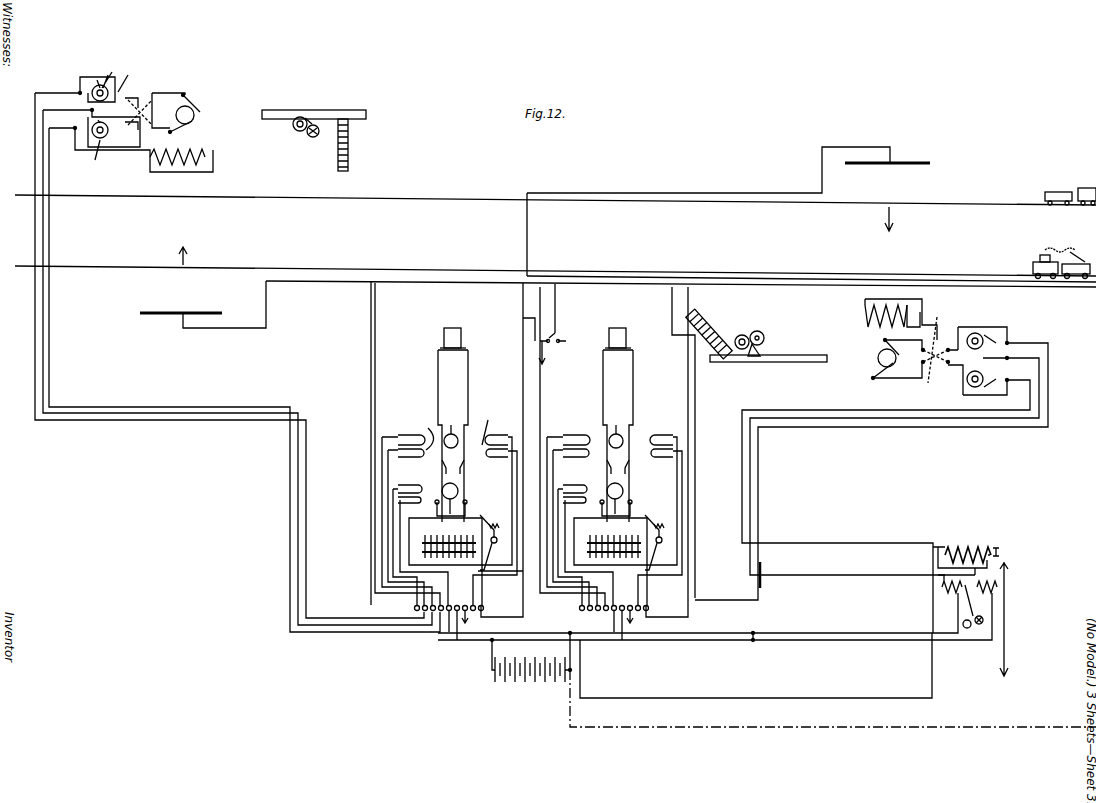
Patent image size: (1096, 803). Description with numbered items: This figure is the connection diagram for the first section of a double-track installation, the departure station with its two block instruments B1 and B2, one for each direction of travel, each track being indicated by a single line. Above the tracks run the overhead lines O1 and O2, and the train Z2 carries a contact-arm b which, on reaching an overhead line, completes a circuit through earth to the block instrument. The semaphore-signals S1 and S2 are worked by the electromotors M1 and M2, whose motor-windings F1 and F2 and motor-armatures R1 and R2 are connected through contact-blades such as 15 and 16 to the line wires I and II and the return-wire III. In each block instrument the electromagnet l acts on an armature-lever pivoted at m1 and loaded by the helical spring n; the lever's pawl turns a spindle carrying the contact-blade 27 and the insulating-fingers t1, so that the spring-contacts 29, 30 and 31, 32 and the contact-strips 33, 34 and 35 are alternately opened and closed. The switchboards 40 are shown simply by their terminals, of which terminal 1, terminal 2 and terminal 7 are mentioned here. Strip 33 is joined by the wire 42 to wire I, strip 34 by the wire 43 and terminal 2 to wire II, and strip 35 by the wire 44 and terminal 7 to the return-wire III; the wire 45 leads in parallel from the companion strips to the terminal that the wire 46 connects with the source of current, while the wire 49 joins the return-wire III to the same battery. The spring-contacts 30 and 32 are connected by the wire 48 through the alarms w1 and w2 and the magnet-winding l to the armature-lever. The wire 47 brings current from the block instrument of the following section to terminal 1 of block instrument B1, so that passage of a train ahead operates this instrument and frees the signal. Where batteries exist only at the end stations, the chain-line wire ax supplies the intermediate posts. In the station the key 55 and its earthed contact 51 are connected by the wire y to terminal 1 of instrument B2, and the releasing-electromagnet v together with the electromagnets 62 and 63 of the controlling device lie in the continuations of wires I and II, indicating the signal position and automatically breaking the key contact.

The overhead line O1 is at (669, 196).
The overhead line O2 is at (300, 290).
The wire 47 is at (371, 347).
The wire I is at (533, 355).
The wire II is at (538, 367).
The return-wire III is at (542, 380).
The electromotor M1 is at (124, 111).
The motor-winding F1 is at (189, 157).
The motor-armature R1 is at (164, 120).
The semaphore-signal S1 is at (314, 130).
The contact-blade 16 is at (1075, 190).
The train Z2 is at (1049, 261).
The contact-arm b is at (1076, 248).
The terminal 2 is at (548, 324).
The block instrument B1 is at (441, 461).
The alarm w1 is at (453, 327).
The wire 48 is at (453, 436).
The insulating-finger t1 is at (451, 432).
The spring-contact 31 is at (445, 471).
The spring-contact 32 is at (469, 471).
The terminal 7 is at (450, 490).
The spring-contact 29 is at (437, 504).
The spring-contact 30 is at (466, 504).
The electromagnet l is at (445, 541).
The helical spring n is at (497, 529).
The pivot m1 is at (493, 539).
The contact-strip 34 is at (410, 443).
The contact-blade 27 is at (425, 431).
The contact-strip 33 is at (410, 493).
The contact-strip 35 is at (500, 443).
The wire 43 is at (382, 480).
The wire 42 is at (388, 524).
The wire 45 is at (459, 528).
The wire 44 is at (495, 521).
The switchboard 40 is at (502, 450).
The terminal 1 is at (463, 615).
The block instrument B2 is at (617, 463).
The alarm w2 is at (637, 336).
The wire 46 is at (540, 631).
The wire 49 is at (470, 648).
The wire ax is at (833, 698).
The wire y is at (756, 665).
The semaphore-signal S2 is at (756, 335).
The motor-winding F2 is at (888, 319).
The motor-armature R2 is at (886, 366).
The contact-blade 15 is at (931, 351).
The electromotor M2 is at (978, 351).
The electromagnet v is at (962, 551).
The key 55 is at (997, 541).
The contact 51 is at (1011, 616).
The electromagnet 62 is at (950, 595).
The electromagnet 63 is at (980, 604).